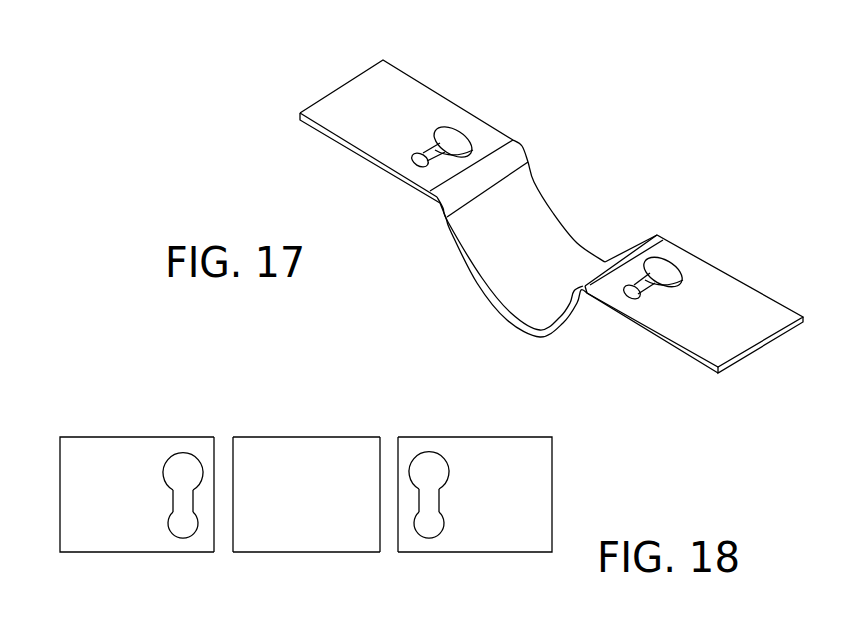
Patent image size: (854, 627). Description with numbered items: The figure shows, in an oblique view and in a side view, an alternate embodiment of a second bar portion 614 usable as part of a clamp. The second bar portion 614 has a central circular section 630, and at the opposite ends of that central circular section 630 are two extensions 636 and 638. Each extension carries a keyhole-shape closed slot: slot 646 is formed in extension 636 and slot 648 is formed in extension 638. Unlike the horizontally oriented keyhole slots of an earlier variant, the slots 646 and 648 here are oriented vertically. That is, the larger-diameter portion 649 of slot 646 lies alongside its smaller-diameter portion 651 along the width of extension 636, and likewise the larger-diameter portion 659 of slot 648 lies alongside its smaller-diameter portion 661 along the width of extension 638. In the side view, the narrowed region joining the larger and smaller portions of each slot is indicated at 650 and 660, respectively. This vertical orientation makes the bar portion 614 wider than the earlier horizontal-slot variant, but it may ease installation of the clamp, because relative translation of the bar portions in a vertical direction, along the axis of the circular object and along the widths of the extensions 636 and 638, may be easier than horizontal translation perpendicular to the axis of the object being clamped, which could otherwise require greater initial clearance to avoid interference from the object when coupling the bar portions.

In FIG. 17, the second bar portion 614 is at (392, 44).
In FIG. 18, the second bar portion 614 is at (82, 420).
In FIG. 17, the central circular section 630 is at (532, 236).
In FIG. 18, the central circular section 630 is at (315, 526).
In FIG. 17, the extension 636 is at (390, 90).
In FIG. 18, the extension 636 is at (83, 537).
In FIG. 17, the extension 638 is at (745, 316).
In FIG. 18, the extension 638 is at (523, 533).
In FIG. 17, the keyhole-shape closed slot 646 is at (412, 174).
In FIG. 18, the keyhole-shape closed slot 646 is at (177, 546).
In FIG. 17, the keyhole-shape closed slot 648 is at (645, 308).
In FIG. 18, the keyhole-shape closed slot 648 is at (442, 542).
In FIG. 17, the larger-diameter portion 649 is at (456, 142).
In FIG. 18, the larger-diameter portion 649 is at (183, 468).
In FIG. 17, the neck of first slot 650 is at (433, 181).
In FIG. 18, the neck of first slot 650 is at (188, 504).
In FIG. 17, the smaller-diameter portion 651 is at (415, 162).
In FIG. 18, the smaller-diameter portion 651 is at (190, 527).
In FIG. 17, the larger-diameter portion 659 is at (666, 273).
In FIG. 18, the larger-diameter portion 659 is at (430, 468).
In FIG. 17, the neck of second slot 660 is at (640, 284).
In FIG. 18, the neck of second slot 660 is at (432, 504).
In FIG. 17, the smaller-diameter portion 661 is at (634, 297).
In FIG. 18, the smaller-diameter portion 661 is at (428, 532).